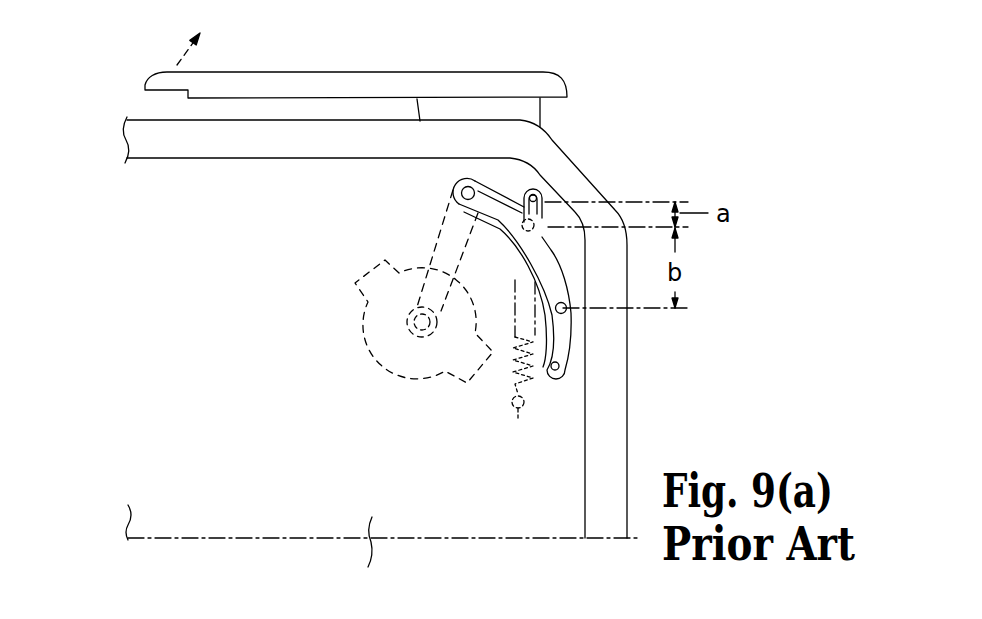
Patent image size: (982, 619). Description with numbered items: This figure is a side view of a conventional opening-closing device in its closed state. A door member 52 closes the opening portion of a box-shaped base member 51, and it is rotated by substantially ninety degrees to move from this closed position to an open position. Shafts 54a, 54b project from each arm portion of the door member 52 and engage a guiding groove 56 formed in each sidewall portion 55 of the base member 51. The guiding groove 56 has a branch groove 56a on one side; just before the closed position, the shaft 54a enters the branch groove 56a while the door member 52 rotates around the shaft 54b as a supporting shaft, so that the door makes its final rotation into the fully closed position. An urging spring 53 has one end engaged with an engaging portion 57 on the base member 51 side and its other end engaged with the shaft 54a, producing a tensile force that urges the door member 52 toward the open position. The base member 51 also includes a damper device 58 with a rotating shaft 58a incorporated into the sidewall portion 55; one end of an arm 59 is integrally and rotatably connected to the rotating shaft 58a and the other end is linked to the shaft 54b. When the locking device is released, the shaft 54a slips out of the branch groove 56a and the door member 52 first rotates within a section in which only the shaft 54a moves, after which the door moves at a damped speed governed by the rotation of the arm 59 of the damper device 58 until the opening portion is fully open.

The base member 51 is at (186, 436).
The door member 52 is at (548, 62).
The urging spring 53 is at (502, 378).
The shaft 54a is at (543, 213).
The shaft 54b is at (469, 186).
The sidewall portion 55 is at (383, 555).
The guiding groove 56 is at (507, 200).
The branch groove 56a is at (540, 219).
The engaging portion 57 is at (521, 415).
The damper device 58 is at (408, 357).
The rotating shaft 58a is at (407, 328).
The arm 59 is at (445, 238).